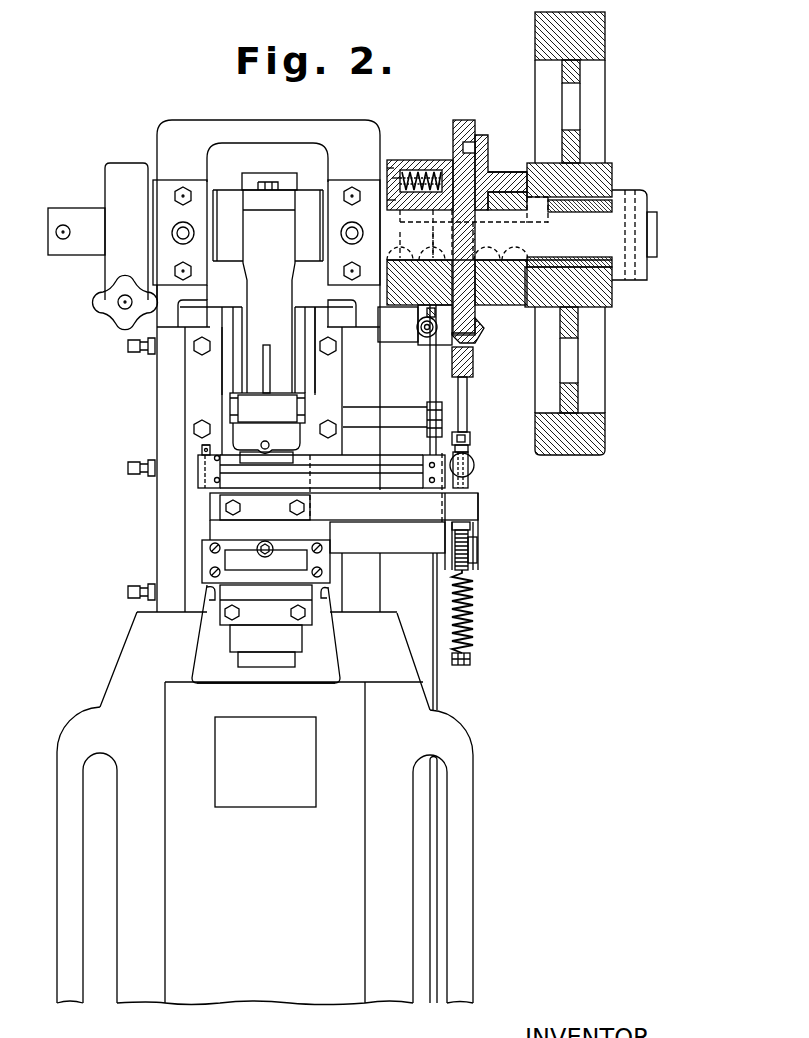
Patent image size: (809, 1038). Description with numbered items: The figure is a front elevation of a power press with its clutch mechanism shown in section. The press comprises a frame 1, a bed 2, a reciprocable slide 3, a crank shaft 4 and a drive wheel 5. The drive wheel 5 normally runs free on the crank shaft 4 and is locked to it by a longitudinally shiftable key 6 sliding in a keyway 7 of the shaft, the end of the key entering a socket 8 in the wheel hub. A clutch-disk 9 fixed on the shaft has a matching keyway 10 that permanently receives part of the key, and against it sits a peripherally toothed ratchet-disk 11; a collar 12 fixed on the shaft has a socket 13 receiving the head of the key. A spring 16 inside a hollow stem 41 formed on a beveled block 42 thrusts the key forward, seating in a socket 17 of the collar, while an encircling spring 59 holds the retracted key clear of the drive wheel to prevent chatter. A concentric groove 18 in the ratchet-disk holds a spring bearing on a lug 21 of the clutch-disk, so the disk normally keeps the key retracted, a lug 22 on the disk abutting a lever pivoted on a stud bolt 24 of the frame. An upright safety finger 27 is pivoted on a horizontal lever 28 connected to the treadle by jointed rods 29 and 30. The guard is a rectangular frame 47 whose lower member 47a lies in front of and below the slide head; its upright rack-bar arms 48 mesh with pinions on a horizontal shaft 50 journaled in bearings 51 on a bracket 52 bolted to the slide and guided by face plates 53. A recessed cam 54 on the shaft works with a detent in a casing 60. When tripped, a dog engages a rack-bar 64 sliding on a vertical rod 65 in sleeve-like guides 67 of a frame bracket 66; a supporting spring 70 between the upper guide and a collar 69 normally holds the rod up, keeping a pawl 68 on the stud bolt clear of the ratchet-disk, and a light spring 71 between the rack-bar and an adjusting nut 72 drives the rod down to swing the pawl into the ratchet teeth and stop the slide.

The frame 1 is at (160, 509).
The bed 2 is at (316, 728).
The reciprocable slide 3 is at (222, 617).
The crank shaft 4 is at (657, 237).
The drive wheel 5 is at (603, 430).
The key 6 is at (496, 188).
The keyway 7 is at (400, 222).
The socket 8 is at (548, 197).
The clutch-disk 9 is at (488, 148).
The keyway 10 is at (510, 200).
The ratchet-disk 11 is at (462, 130).
The collar 12 is at (400, 160).
The socket 13 is at (392, 200).
The spiral compression spring 16 is at (388, 168).
The socket 17 is at (392, 180).
The groove 18 is at (475, 145).
The lug 21 is at (478, 336).
The lug 22 is at (437, 320).
The stud bolt 24 is at (393, 337).
The safety finger 27 is at (430, 376).
The lever 28 is at (427, 425).
The rod 29 is at (433, 620).
The rod 30 is at (435, 923).
The hollow stem 41 is at (433, 218).
The block 42 is at (448, 212).
The frame 47 is at (335, 645).
The lower horizontal member 47a is at (255, 683).
The arms 48 is at (208, 520).
The horizontal shaft 50 is at (325, 473).
The bearings 51 is at (200, 460).
The horizontal bracket 52 is at (408, 512).
The face plates 53 is at (200, 475).
The cam 54 is at (469, 482).
The spiral compression spring 59 is at (428, 172).
The casing 60 is at (475, 465).
The rack-bar 64 is at (471, 531).
The vertical rod 65 is at (468, 400).
The bracket 66 is at (385, 538).
The guides 67 is at (478, 553).
The pawl 68 is at (474, 371).
The collar 69 is at (471, 438).
The supporting spring 70 is at (469, 449).
The spiral spring 71 is at (474, 603).
The adjusting nut 72 is at (471, 657).